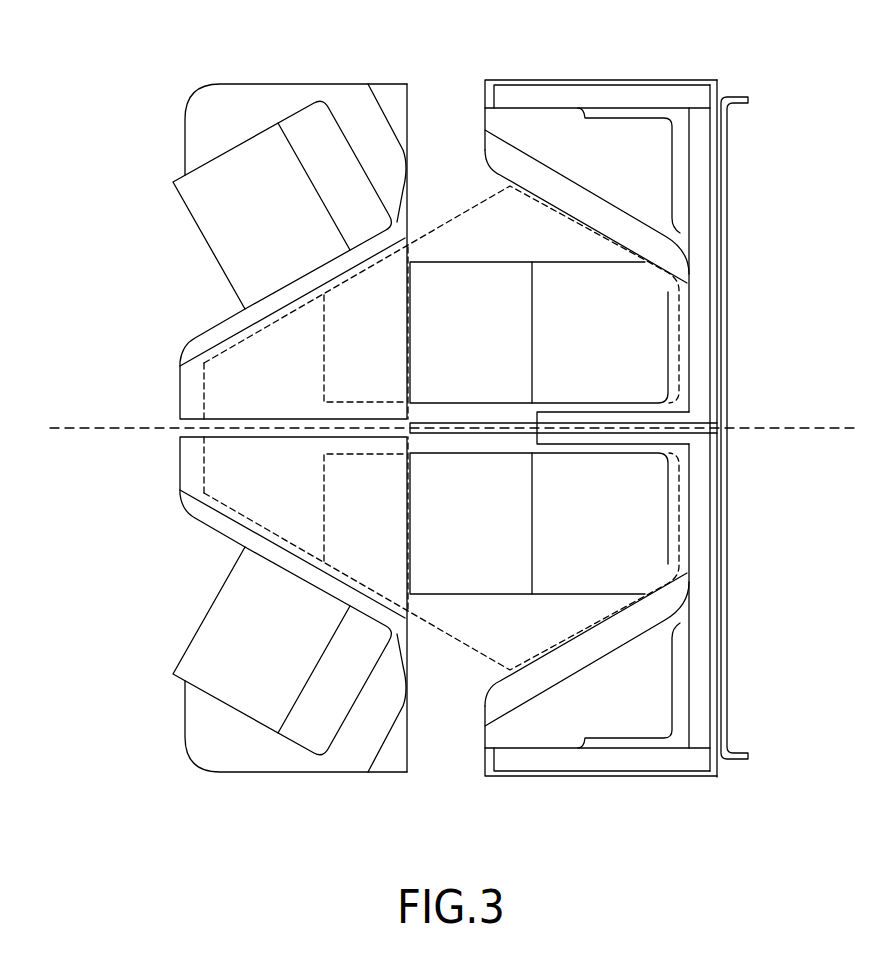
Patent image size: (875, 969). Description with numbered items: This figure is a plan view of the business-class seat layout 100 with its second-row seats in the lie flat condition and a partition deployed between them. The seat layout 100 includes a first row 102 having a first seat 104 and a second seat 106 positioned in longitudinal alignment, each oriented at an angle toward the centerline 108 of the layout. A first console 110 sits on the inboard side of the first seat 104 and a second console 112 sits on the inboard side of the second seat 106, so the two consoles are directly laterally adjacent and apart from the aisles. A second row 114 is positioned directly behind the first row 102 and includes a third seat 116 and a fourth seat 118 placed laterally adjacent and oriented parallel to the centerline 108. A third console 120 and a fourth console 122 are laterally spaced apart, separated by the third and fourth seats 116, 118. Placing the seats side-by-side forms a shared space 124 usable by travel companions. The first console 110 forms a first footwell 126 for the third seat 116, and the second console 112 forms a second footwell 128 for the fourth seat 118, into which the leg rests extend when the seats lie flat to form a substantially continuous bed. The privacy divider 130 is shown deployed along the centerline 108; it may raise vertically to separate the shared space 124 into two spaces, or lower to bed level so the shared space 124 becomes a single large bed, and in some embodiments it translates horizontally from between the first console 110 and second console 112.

The seat layout 100 is at (185, 42).
The first row 102 is at (298, 84).
The first seat 104 is at (274, 653).
The second seat 106 is at (276, 228).
The centerline 108 is at (788, 427).
The first console 110 is at (293, 492).
The second console 112 is at (293, 392).
The second row 114 is at (608, 80).
The third seat 116 is at (486, 537).
The fourth seat 118 is at (486, 347).
The third console 120 is at (636, 708).
The fourth console 122 is at (636, 170).
The shared space 124 is at (448, 222).
The first footwell 126 is at (224, 458).
The second footwell 128 is at (224, 398).
The privacy divider 130 is at (657, 428).